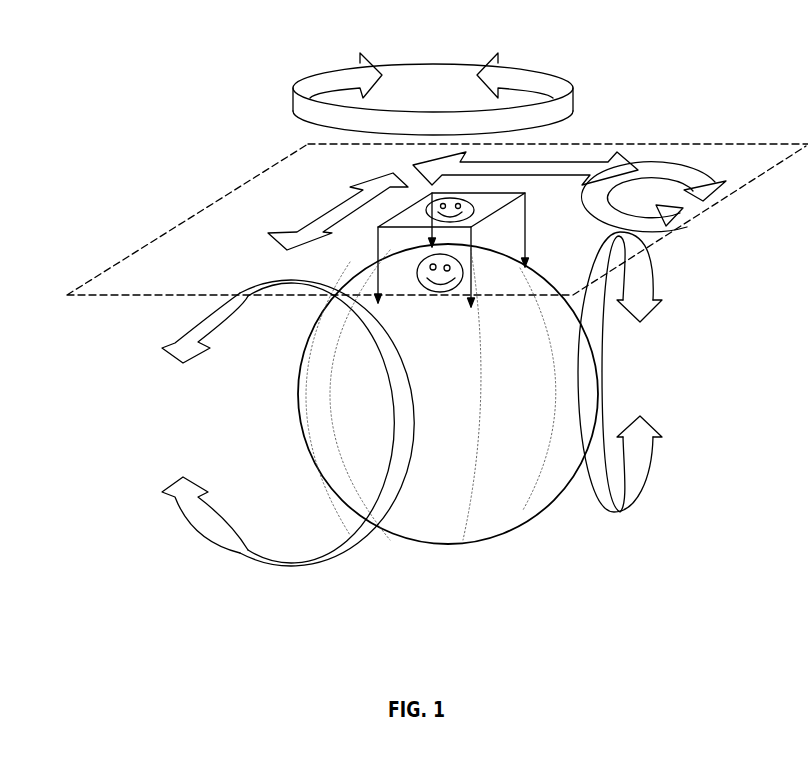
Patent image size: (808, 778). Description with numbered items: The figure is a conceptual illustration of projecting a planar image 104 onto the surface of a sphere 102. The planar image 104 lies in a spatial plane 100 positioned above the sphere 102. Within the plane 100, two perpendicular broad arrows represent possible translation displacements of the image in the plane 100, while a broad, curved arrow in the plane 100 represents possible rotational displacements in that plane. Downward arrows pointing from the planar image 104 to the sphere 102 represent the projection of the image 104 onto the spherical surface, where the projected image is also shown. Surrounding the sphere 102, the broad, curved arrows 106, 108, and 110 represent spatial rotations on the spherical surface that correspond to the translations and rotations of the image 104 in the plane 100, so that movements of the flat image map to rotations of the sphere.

The spatial plane 100 is at (202, 212).
The sphere 102 is at (497, 538).
The planar image 104 is at (520, 197).
The broad curved arrow 106 is at (618, 514).
The broad curved arrow 108 is at (250, 568).
The broad curved arrow 110 is at (295, 88).